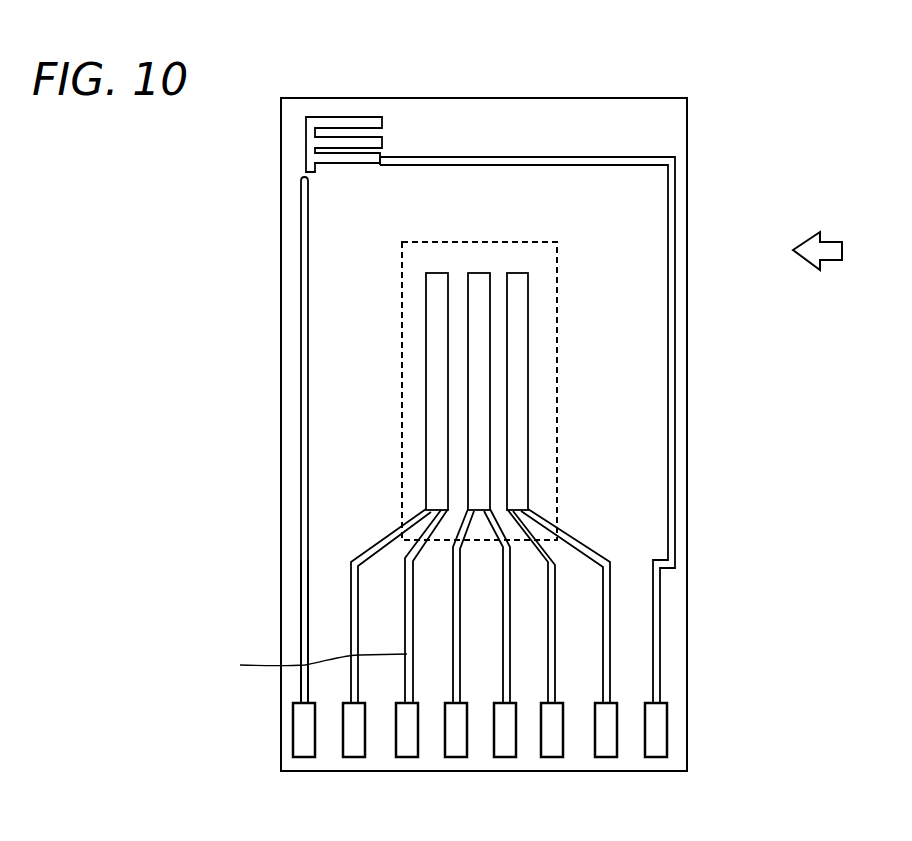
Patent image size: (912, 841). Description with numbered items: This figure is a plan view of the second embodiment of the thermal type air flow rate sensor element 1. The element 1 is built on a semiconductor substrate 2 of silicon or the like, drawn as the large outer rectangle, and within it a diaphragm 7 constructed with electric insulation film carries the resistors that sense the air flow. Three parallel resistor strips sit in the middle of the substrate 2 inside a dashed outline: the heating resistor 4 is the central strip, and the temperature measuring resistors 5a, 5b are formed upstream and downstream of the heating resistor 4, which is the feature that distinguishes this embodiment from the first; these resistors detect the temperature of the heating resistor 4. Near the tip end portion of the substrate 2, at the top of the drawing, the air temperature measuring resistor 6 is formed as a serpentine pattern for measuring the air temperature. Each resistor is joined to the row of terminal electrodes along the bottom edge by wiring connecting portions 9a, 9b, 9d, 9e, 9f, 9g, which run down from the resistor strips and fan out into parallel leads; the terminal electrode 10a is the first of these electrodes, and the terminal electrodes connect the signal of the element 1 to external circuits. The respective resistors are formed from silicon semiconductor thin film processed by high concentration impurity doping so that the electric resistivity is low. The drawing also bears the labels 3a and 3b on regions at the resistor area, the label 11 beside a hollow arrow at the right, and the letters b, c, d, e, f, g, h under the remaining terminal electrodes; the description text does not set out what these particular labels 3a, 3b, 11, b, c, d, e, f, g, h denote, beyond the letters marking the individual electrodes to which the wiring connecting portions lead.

The thermal type air flow rate sensor element 1 is at (623, 93).
The semiconductor substrate 2 is at (513, 122).
The diaphragm region 3a is at (490, 258).
The diaphragm side region 3b is at (580, 367).
The heating resistor 4 is at (468, 292).
The temperature measuring resistor 5a is at (528, 327).
The temperature measuring resistor 5b is at (427, 318).
The air temperature measuring resistor 6 is at (320, 117).
The diaphragm 7 is at (367, 400).
The wiring connecting portion 9a is at (307, 620).
The wiring connecting portion 9b is at (352, 563).
The wiring connecting portion 9d is at (462, 657).
The wiring connecting portion 9e is at (508, 607).
The wiring connecting portion 9f is at (553, 585).
The wiring connecting portion 9g is at (648, 157).
The terminal electrode 10a is at (297, 739).
The air flow direction 11 is at (828, 248).
The terminal pad b is at (356, 750).
The terminal pad c is at (410, 750).
The terminal pad d is at (459, 750).
The terminal pad e is at (508, 750).
The terminal pad f is at (556, 750).
The terminal pad g is at (610, 750).
The terminal pad h is at (661, 750).